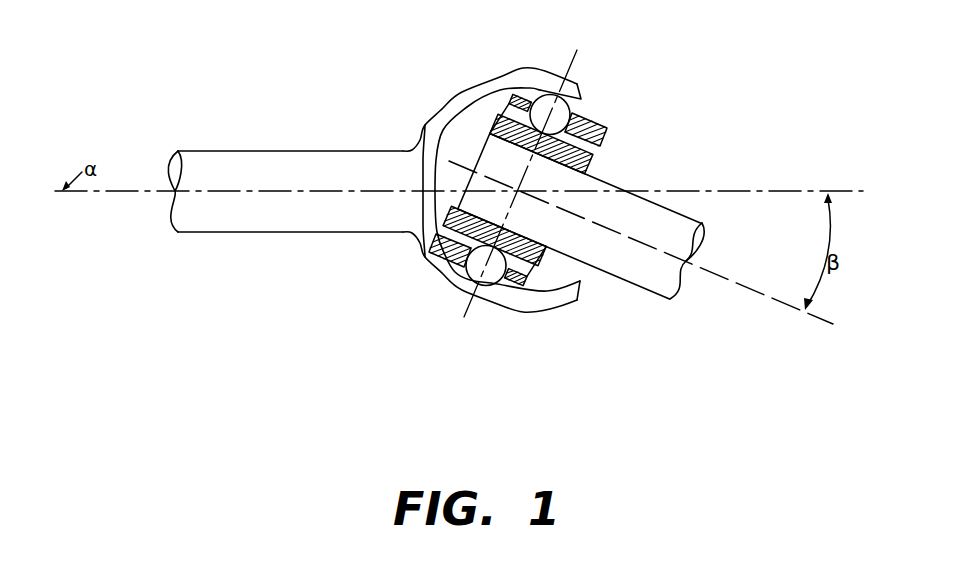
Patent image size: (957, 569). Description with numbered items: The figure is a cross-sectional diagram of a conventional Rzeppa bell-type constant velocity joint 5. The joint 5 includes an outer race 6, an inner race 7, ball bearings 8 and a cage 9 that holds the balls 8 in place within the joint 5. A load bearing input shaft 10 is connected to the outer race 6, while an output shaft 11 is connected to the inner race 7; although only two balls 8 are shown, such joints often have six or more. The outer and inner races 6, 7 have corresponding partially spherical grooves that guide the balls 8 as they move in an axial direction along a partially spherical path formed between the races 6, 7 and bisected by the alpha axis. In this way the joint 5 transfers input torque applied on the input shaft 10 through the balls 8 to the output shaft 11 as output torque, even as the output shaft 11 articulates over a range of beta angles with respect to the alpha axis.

The constant velocity joint 5 is at (203, 320).
The outer race 6 is at (540, 128).
The inner race 7 is at (542, 250).
The ball bearings 8 is at (558, 106).
The cage 9 is at (592, 134).
The input shaft 10 is at (302, 157).
The output shaft 11 is at (663, 220).